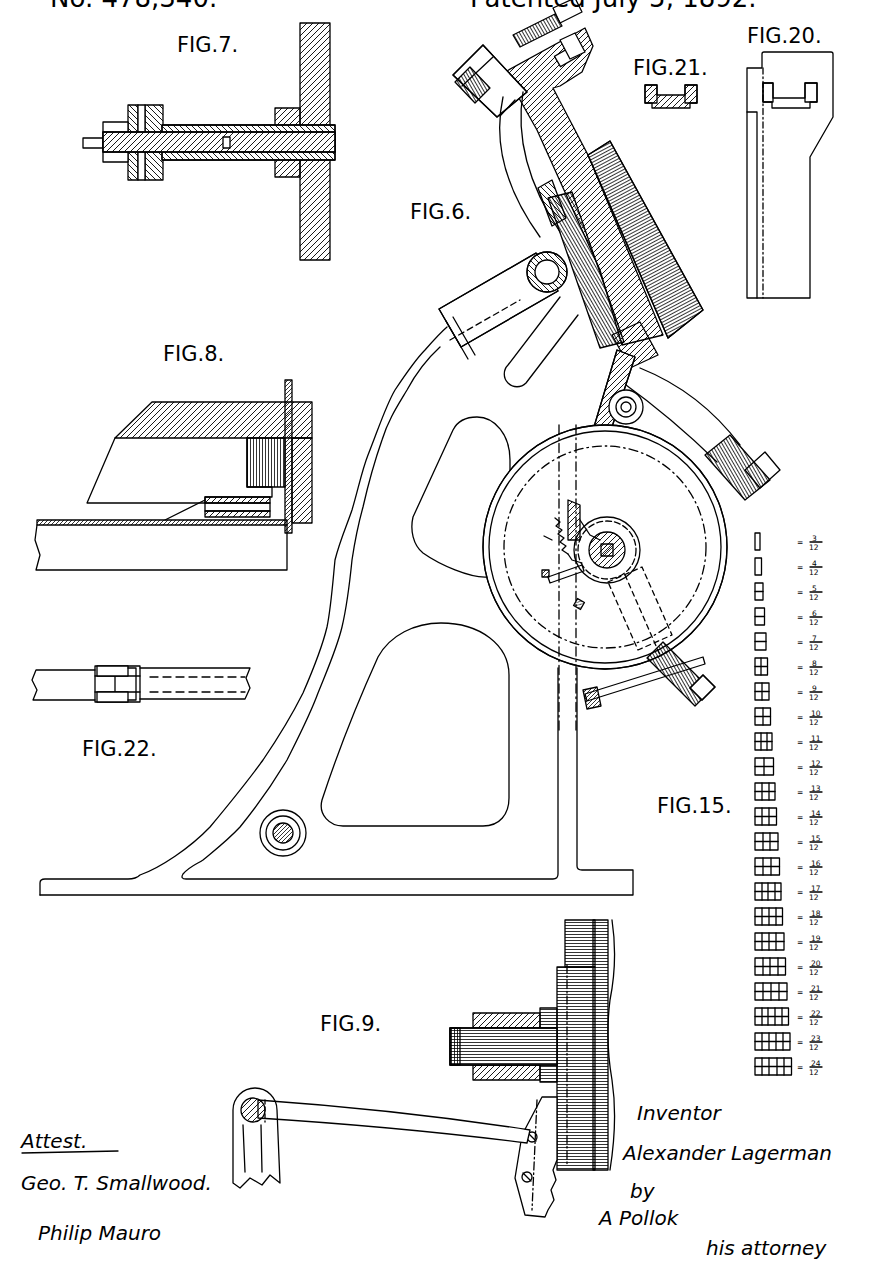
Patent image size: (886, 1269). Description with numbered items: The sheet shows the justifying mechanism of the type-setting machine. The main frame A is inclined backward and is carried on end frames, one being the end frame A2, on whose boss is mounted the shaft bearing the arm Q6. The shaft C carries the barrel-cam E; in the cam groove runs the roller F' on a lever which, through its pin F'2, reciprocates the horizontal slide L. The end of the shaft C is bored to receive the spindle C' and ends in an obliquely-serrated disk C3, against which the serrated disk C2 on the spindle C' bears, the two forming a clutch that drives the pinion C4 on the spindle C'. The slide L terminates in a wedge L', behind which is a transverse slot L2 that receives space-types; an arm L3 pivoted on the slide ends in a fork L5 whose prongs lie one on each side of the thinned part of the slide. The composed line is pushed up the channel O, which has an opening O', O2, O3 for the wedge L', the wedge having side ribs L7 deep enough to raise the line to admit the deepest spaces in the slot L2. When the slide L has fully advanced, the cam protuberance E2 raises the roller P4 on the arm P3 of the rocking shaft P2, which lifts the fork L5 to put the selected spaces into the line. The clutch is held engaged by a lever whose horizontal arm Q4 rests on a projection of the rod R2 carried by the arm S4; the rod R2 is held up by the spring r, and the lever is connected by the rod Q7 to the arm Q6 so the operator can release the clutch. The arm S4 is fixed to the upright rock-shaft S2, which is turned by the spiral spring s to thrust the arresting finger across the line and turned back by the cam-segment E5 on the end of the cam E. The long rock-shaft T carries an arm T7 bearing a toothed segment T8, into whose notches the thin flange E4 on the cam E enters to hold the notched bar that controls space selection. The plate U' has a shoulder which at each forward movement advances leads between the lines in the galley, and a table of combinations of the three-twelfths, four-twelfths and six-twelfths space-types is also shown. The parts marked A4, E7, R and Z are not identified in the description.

In FIG. 8, the main frame A is at (213, 452).
In FIG. 6, the main frame A is at (596, 187).
In FIG. 6, the end frame A2 is at (336, 611).
In FIG. 8, the frame body part A4 is at (186, 479).
In FIG. 7, the shaft C is at (219, 155).
In FIG. 6, the shaft C is at (614, 550).
In FIG. 9, the shaft C is at (503, 1057).
In FIG. 7, the spindle C' is at (219, 124).
In FIG. 7, the obliquely-serrated disk C2 is at (133, 180).
In FIG. 7, the obliquely-serrated disk C3 is at (154, 180).
In FIG. 7, the pinion C4 is at (110, 162).
In FIG. 7, the barrel-cam E is at (309, 141).
In FIG. 6, the barrel-cam E is at (605, 577).
In FIG. 9, the barrel-cam E is at (586, 1045).
In FIG. 6, the cam protuberance E2 is at (605, 547).
In FIG. 6, the thin flange E4 is at (686, 660).
In FIG. 9, the thin flange E4 is at (565, 975).
In FIG. 6, the cam-segment E5 is at (592, 517).
In FIG. 6, the slot E7 is at (645, 608).
In FIG. 6, the roller F' is at (633, 305).
In FIG. 6, the pin F'2 is at (547, 23).
In FIG. 22, the slide L is at (195, 668).
In FIG. 6, the slide L is at (588, 46).
In FIG. 22, the wedge L' is at (63, 697).
In FIG. 21, the wedge L' is at (671, 105).
In FIG. 22, the transverse slot L2 is at (100, 702).
In FIG. 22, the arm L3 is at (134, 702).
In FIG. 22, the fork L5 is at (115, 666).
In FIG. 21, the side ribs L7 is at (669, 91).
In FIG. 20, the channel O is at (790, 175).
In FIG. 20, the opening O' is at (790, 104).
In FIG. 20, the opening O2 is at (815, 82).
In FIG. 20, the opening O3 is at (774, 83).
In FIG. 6, the rocking shaft P2 is at (510, 258).
In FIG. 6, the arm P3 is at (548, 350).
In FIG. 6, the roller P4 is at (635, 407).
In FIG. 6, the horizontal arm Q4 is at (545, 570).
In FIG. 6, the arm Q6 is at (645, 679).
In FIG. 6, the rod Q7 is at (594, 706).
In FIG. 6, the lever R is at (552, 575).
In FIG. 6, the rod R2 is at (556, 526).
In FIG. 6, the spring r is at (532, 529).
In FIG. 6, the upright rock-shaft S2 is at (538, 200).
In FIG. 6, the arm S4 is at (601, 433).
In FIG. 6, the spiral spring s is at (566, 210).
In FIG. 9, the rock-shaft T is at (251, 1098).
In FIG. 9, the arm T7 is at (392, 1120).
In FIG. 9, the toothed segment T8 is at (522, 1185).
In FIG. 8, the plate U' is at (299, 455).
In FIG. 6, the block Z is at (645, 236).